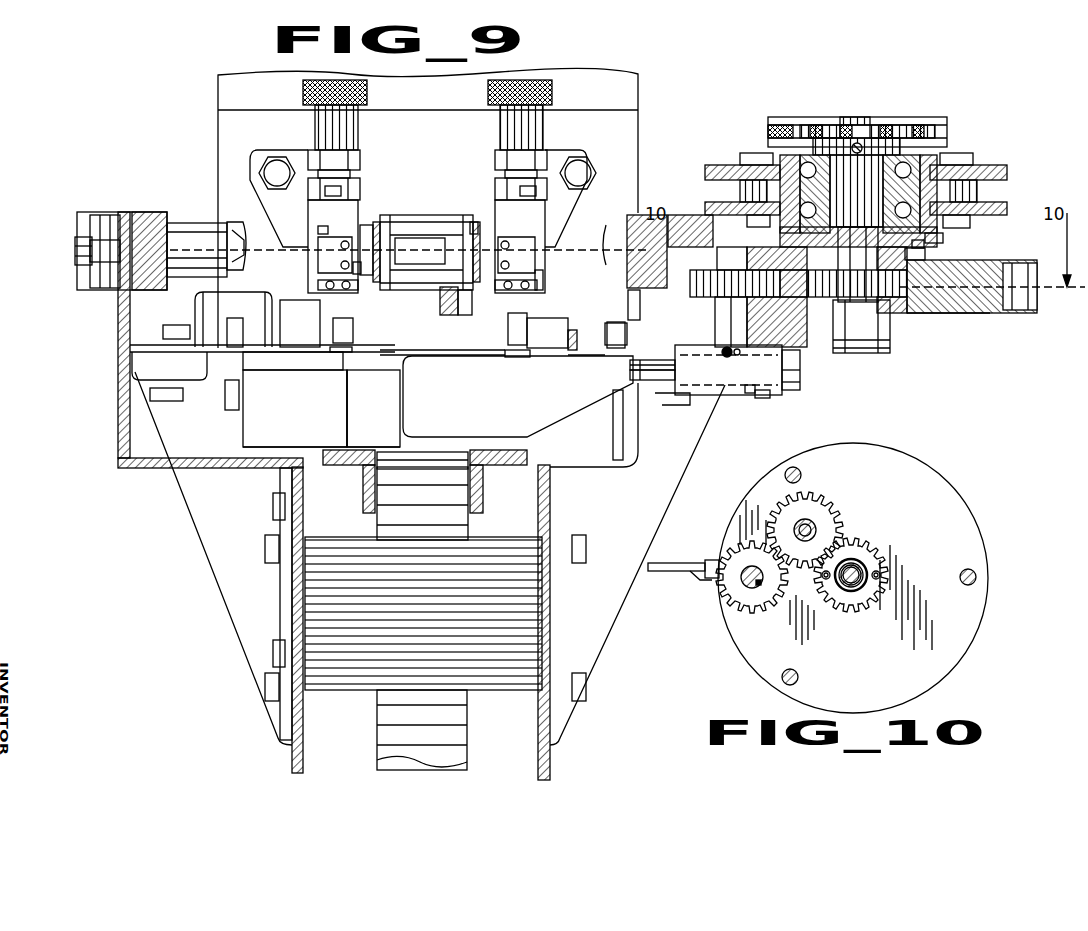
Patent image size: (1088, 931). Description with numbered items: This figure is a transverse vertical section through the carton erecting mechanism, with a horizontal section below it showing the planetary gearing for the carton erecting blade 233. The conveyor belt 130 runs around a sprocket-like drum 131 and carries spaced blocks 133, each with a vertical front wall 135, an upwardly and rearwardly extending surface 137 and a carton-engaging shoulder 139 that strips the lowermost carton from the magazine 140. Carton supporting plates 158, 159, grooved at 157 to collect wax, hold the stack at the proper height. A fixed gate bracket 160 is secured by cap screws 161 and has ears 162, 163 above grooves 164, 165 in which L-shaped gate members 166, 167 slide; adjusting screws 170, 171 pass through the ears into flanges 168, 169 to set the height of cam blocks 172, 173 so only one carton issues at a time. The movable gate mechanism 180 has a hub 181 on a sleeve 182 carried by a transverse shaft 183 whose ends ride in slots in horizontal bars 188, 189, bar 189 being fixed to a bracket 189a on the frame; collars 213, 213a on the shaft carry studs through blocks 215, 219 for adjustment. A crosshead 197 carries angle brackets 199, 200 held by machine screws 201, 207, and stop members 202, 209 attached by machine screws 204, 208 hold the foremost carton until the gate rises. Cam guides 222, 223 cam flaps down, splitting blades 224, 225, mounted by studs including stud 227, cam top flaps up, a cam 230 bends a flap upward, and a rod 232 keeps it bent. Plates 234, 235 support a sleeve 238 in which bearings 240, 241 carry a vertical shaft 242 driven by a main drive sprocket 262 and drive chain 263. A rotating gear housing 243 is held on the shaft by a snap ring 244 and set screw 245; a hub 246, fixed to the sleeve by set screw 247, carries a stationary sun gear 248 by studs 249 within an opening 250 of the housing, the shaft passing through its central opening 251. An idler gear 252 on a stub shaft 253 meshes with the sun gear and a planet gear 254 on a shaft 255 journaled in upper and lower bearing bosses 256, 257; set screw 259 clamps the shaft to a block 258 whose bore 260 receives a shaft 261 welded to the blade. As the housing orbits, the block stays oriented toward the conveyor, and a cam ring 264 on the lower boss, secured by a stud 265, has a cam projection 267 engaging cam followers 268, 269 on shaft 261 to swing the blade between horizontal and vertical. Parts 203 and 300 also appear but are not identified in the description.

In FIG. 9, the conveyor belt 130 is at (332, 445).
In FIG. 9, the sprocket-like drum 131 is at (383, 700).
In FIG. 9, the blocks 133 is at (373, 408).
In FIG. 9, the vertical front wall 135 is at (347, 396).
In FIG. 9, the upwardly and rearwardly extending surface 137 is at (345, 376).
In FIG. 9, the carton-engaging shoulder 139 is at (425, 350).
In FIG. 9, the magazine 140 is at (646, 117).
In FIG. 9, the grooves 157 is at (342, 348).
In FIG. 9, the carton supporting plate 158 is at (508, 357).
In FIG. 9, the carton supporting plate 159 is at (293, 361).
In FIG. 9, the bracket 160 is at (557, 150).
In FIG. 9, the cap screws 161 is at (273, 163).
In FIG. 9, the ear 162 is at (360, 160).
In FIG. 9, the ear 163 is at (495, 160).
In FIG. 9, the groove 164 is at (350, 176).
In FIG. 9, the groove 165 is at (505, 176).
In FIG. 9, the L-shaped gate member 166 is at (334, 235).
In FIG. 9, the L-shaped gate member 167 is at (521, 235).
In FIG. 9, the flange 168 is at (326, 196).
In FIG. 9, the flange 169 is at (538, 197).
In FIG. 9, the adjusting screw 170 is at (358, 128).
In FIG. 9, the adjusting screw 171 is at (500, 128).
In FIG. 9, the cam block 172 is at (354, 322).
In FIG. 9, the cam block 173 is at (508, 325).
In FIG. 9, the movable gate mechanism 180 is at (436, 214).
In FIG. 9, the hub 181 is at (420, 251).
In FIG. 9, the sleeve 182 is at (368, 226).
In FIG. 9, the transverse shaft 183 is at (75, 249).
In FIG. 9, the horizontal bar 188 is at (648, 215).
In FIG. 9, the horizontal bar 189 is at (150, 213).
In FIG. 9, the bracket 189a is at (126, 464).
In FIG. 9, the crosshead 197 is at (318, 230).
In FIG. 9, the angle bracket 199 is at (320, 265).
In FIG. 9, the angle bracket 200 is at (536, 272).
In FIG. 9, the machine screws 201 is at (330, 255).
In FIG. 9, the stop member 202 is at (300, 323).
In FIG. 9, the link 203 is at (441, 293).
In FIG. 9, the machine screws 204 is at (320, 282).
In FIG. 9, the machine screws 207 is at (521, 255).
In FIG. 9, the machine screws 208 is at (541, 288).
In FIG. 9, the stop member 209 is at (552, 334).
In FIG. 9, the collar 213 is at (740, 196).
In FIG. 9, the collar 213a is at (100, 215).
In FIG. 9, the block 215 is at (683, 215).
In FIG. 9, the block 219 is at (77, 218).
In FIG. 9, the cam guide 222 is at (626, 332).
In FIG. 9, the cam guide 223 is at (190, 325).
In FIG. 9, the splitting blade 224 is at (606, 341).
In FIG. 9, the splitting blade 225 is at (132, 352).
In FIG. 9, the stud 227 is at (132, 346).
In FIG. 9, the cam 230 is at (279, 333).
In FIG. 9, the rod 232 is at (195, 300).
In FIG. 9, the carton erecting blade 233 is at (518, 396).
In FIG. 10, the carton erecting blade 233 is at (660, 562).
In FIG. 9, the plate 234 is at (990, 165).
In FIG. 9, the plate 235 is at (1005, 203).
In FIG. 9, the sleeve 238 is at (978, 190).
In FIG. 9, the bearing 240 is at (905, 165).
In FIG. 9, the bearing 241 is at (970, 221).
In FIG. 9, the shaft 242 is at (858, 117).
In FIG. 10, the shaft 242 is at (858, 562).
In FIG. 9, the gear housing 243 is at (956, 317).
In FIG. 10, the gear housing 243 is at (957, 465).
In FIG. 9, the snap ring 244 is at (882, 342).
In FIG. 9, the set screw 245 is at (892, 332).
In FIG. 9, the hub 246 is at (925, 245).
In FIG. 9, the set screw 247 is at (943, 237).
In FIG. 9, the stationary sun gear 248 is at (890, 322).
In FIG. 10, the stationary sun gear 248 is at (863, 562).
In FIG. 9, the studs 249 is at (808, 264).
In FIG. 10, the studs 249 is at (832, 592).
In FIG. 9, the opening 250 is at (925, 254).
In FIG. 10, the opening 250 is at (880, 600).
In FIG. 10, the central opening 251 is at (856, 560).
In FIG. 10, the idler gear 252 is at (812, 522).
In FIG. 10, the stub shaft 253 is at (814, 526).
In FIG. 9, the planet gear 254 is at (772, 300).
In FIG. 10, the planet gear 254 is at (736, 585).
In FIG. 9, the shaft 255 is at (727, 360).
In FIG. 10, the shaft 255 is at (750, 585).
In FIG. 9, the upper bearing boss 256 is at (629, 295).
In FIG. 9, the lower bearing boss 257 is at (728, 370).
In FIG. 9, the block 258 is at (748, 393).
In FIG. 9, the set screw 259 is at (738, 358).
In FIG. 9, the bore 260 is at (767, 398).
In FIG. 9, the shaft 261 is at (632, 374).
In FIG. 10, the shaft 261 is at (708, 560).
In FIG. 9, the main drive sprocket 262 is at (812, 117).
In FIG. 9, the drive chain 263 is at (805, 117).
In FIG. 9, the cam ring 264 is at (632, 361).
In FIG. 9, the stud 265 is at (800, 353).
In FIG. 9, the cam projection 267 is at (800, 370).
In FIG. 9, the cam follower 268 is at (800, 384).
In FIG. 9, the cam follower 269 is at (666, 406).
In FIG. 9, the plate 300 is at (569, 359).